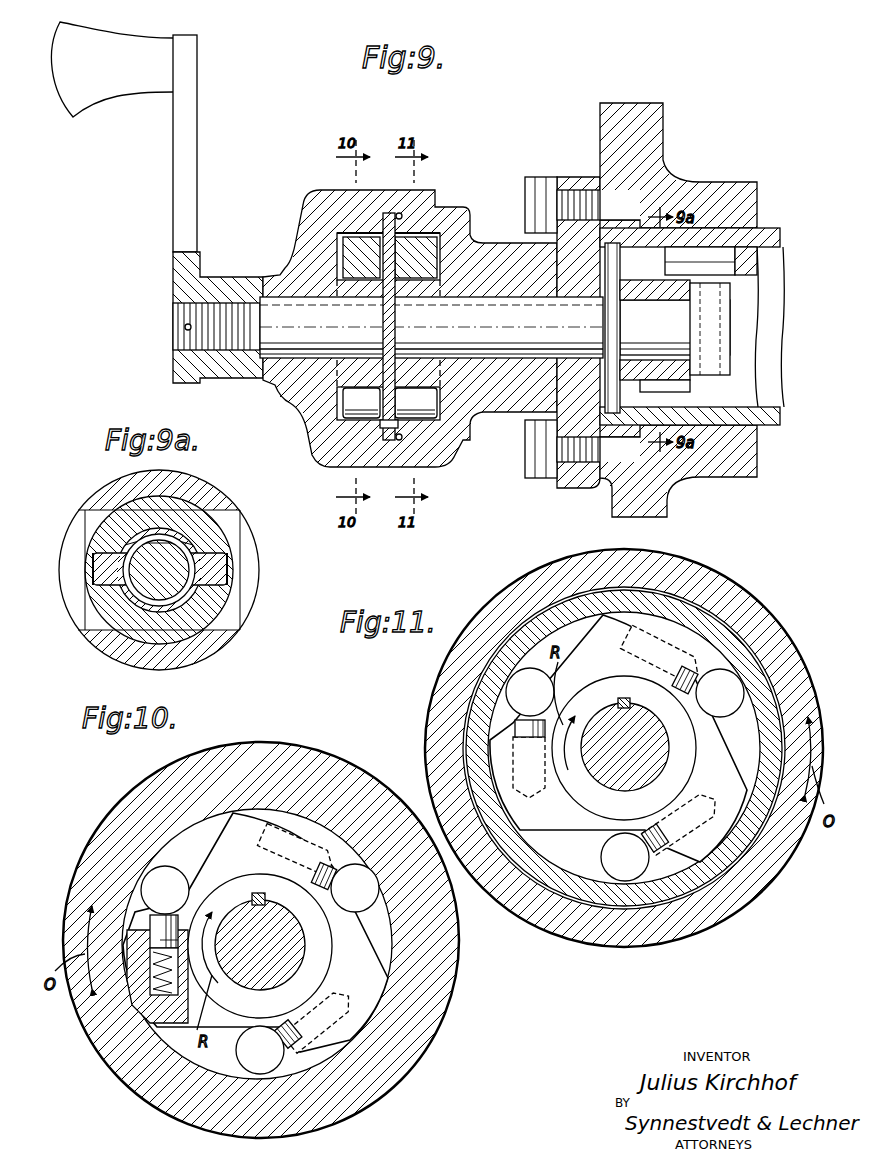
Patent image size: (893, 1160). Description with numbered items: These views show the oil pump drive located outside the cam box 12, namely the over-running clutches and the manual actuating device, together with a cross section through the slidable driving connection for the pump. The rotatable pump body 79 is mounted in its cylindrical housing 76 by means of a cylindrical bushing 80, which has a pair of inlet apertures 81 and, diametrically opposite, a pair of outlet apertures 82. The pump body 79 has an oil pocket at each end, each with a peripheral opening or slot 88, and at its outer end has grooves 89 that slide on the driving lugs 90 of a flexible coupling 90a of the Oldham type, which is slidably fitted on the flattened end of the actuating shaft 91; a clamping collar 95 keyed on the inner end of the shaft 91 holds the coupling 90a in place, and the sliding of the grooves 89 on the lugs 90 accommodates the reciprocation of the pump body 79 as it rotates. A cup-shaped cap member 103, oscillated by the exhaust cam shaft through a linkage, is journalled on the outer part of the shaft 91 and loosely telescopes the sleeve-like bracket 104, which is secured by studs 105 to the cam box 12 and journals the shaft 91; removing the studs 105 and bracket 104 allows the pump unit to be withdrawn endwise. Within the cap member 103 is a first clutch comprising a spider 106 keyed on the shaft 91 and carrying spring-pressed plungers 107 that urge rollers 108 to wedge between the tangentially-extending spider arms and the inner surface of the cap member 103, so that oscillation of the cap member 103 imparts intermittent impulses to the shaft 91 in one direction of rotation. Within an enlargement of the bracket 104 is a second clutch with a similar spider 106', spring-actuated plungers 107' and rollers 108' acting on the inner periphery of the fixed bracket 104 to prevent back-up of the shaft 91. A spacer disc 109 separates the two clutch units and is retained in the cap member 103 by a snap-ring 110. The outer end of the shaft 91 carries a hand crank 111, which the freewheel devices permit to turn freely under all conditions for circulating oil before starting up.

In FIG. 9, the hand crank 111 is at (190, 99).
In FIG. 9, the cup-shaped cap member 103 is at (330, 192).
In FIG. 10, the cup-shaped cap member 103 is at (296, 748).
In FIG. 11, the cup-shaped cap member 103 is at (757, 882).
In FIG. 9, the sleeve-like bracket 104 is at (506, 243).
In FIG. 11, the sleeve-like bracket 104 is at (541, 877).
In FIG. 9, the studs 105 is at (538, 185).
In FIG. 9, the cam box 12 is at (600, 124).
In FIG. 9, the cylindrical housing 76 is at (733, 478).
In FIG. 9, the cylindrical bushing 80 is at (780, 238).
In FIG. 9A, the cylindrical bushing 80 is at (200, 490).
In FIG. 9, the rotatable pump body 79 is at (766, 413).
In FIG. 9A, the rotatable pump body 79 is at (215, 522).
In FIG. 9A, the inlet apertures 81 is at (87, 510).
In FIG. 9A, the outlet apertures 82 is at (248, 550).
In FIG. 9, the peripheral opening 88 is at (707, 262).
In FIG. 9, the grooves 89 is at (724, 293).
In FIG. 9A, the grooves 89 is at (96, 562).
In FIG. 9, the driving lugs 90 is at (643, 285).
In FIG. 9A, the driving lugs 90 is at (232, 580).
In FIG. 9, the flexible coupling 90a is at (700, 383).
In FIG. 9A, the flexible coupling 90a is at (187, 612).
In FIG. 9, the actuating shaft 91 is at (451, 327).
In FIG. 9A, the actuating shaft 91 is at (148, 548).
In FIG. 10, the actuating shaft 91 is at (293, 950).
In FIG. 11, the actuating shaft 91 is at (653, 733).
In FIG. 9, the clamping collar 95 is at (724, 322).
In FIG. 9, the spider 106 is at (354, 394).
In FIG. 10, the spider 106 is at (255, 932).
In FIG. 9, the spider 106' is at (411, 228).
In FIG. 11, the spider 106' is at (618, 738).
In FIG. 10, the spring-pressed plungers 107 is at (232, 933).
In FIG. 11, the spring-actuated plungers 107' is at (629, 790).
In FIG. 9, the rollers 108 is at (352, 417).
In FIG. 10, the rollers 108 is at (260, 969).
In FIG. 11, the rollers 108' is at (625, 821).
In FIG. 9, the spacer disc 109 is at (385, 428).
In FIG. 9, the snap-ring 110 is at (397, 440).